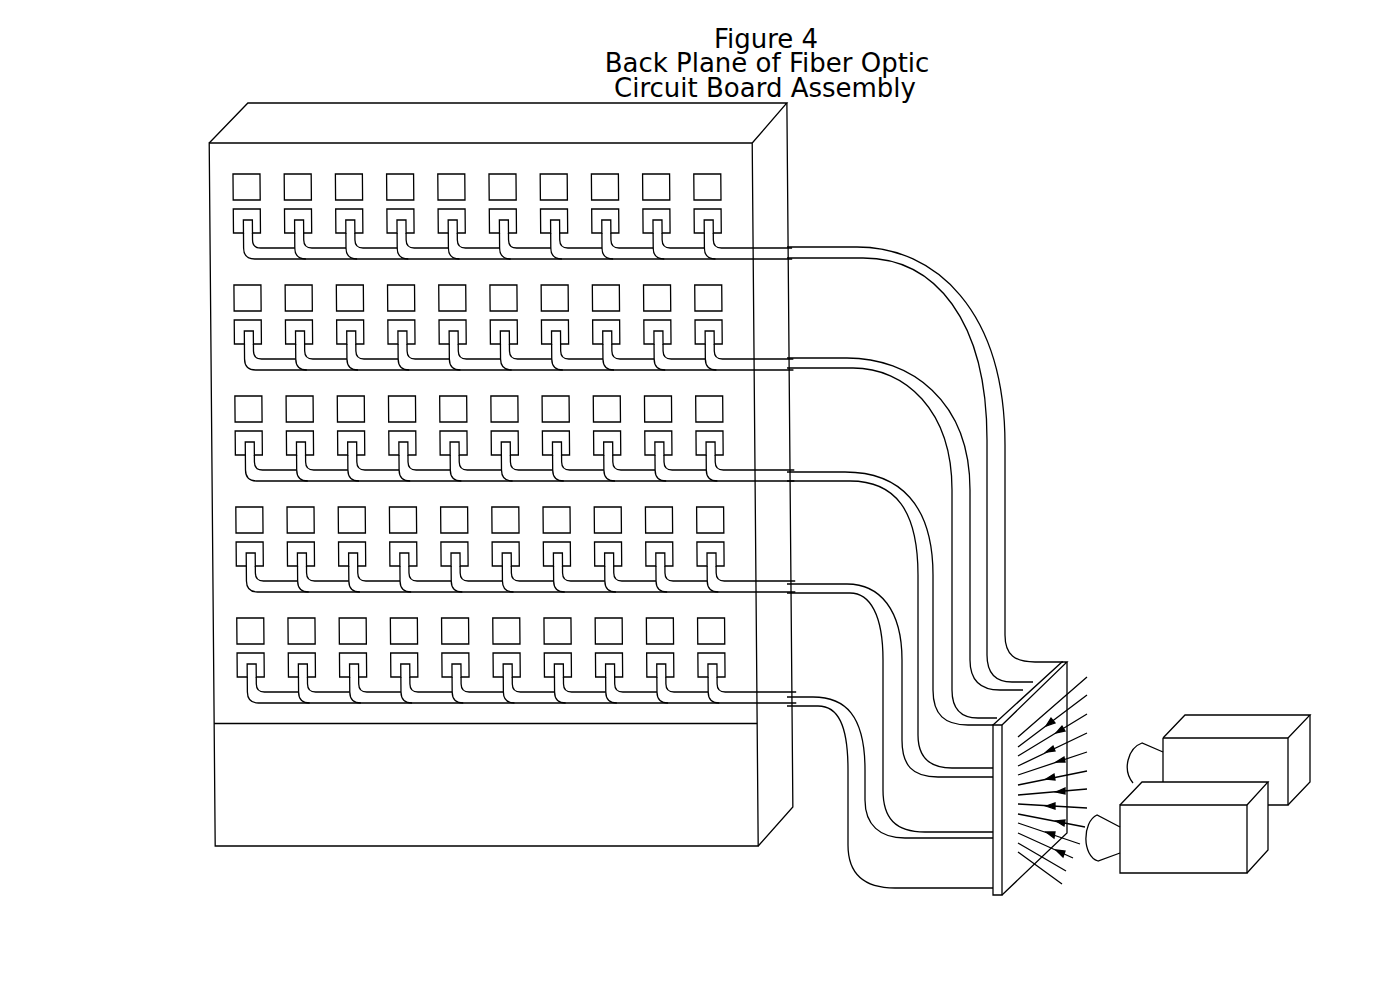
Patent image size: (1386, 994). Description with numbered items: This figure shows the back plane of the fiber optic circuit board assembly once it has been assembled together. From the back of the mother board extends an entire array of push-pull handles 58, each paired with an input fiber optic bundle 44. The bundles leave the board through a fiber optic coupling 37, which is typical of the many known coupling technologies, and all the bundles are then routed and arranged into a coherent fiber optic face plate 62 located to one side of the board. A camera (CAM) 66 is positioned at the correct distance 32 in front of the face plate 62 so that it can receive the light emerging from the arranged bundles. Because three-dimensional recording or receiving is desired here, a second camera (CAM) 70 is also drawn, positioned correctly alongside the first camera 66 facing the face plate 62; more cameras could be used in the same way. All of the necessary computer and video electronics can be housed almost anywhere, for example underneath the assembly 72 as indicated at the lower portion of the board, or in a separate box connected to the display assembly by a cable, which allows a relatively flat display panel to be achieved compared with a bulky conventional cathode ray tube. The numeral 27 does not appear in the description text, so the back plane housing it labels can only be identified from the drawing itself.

The back plane housing 27 is at (308, 101).
The push-pull handle 58 is at (706, 185).
The input fiber optic bundle 44 is at (706, 222).
The fiber optic coupling 37 is at (712, 243).
The assembly 72 is at (493, 790).
The coherent fiber optic face plate 62 is at (1067, 662).
The correct distance 32 is at (1109, 772).
The camera (CAM) 66 is at (1253, 727).
The camera (CAM) 70 is at (1203, 838).